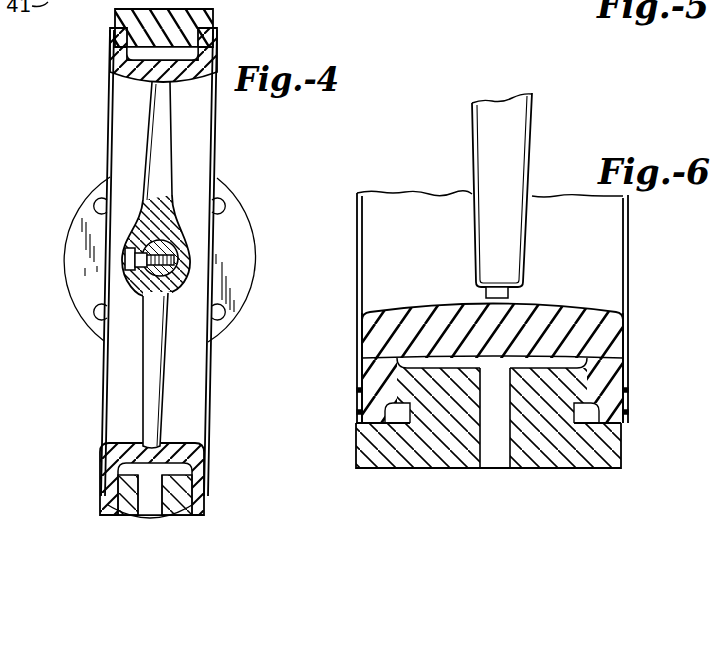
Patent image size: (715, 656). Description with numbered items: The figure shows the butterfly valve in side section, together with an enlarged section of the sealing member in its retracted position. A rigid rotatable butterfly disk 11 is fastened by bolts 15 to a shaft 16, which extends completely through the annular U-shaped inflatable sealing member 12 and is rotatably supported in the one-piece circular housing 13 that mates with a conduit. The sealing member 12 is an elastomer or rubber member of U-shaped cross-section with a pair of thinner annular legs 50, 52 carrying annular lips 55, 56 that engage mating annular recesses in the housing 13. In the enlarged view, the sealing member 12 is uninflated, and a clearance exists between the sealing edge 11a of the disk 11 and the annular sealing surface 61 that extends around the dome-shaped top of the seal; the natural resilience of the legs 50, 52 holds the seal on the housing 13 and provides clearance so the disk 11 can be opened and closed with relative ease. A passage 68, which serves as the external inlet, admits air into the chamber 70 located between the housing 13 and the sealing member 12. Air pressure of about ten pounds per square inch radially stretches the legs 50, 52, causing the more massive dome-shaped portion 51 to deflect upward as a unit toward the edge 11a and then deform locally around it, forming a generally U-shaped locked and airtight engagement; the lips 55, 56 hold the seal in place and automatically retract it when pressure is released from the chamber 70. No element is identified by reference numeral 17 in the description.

In FIG. 4, the butterfly disk 11 is at (175, 142).
In FIG. 6, the butterfly disk 11 is at (497, 190).
In FIG. 6, the sealing edge 11a is at (483, 287).
In FIG. 6, the annular U-shaped inflatable sealing member 12 is at (627, 337).
In FIG. 4, the circular housing 13 is at (217, 15).
In FIG. 6, the circular housing 13 is at (620, 453).
In FIG. 4, the bolts 15 is at (123, 247).
In FIG. 4, the shaft 16 is at (163, 233).
In FIG. 6, the piston ring 17 is at (356, 412).
In FIG. 6, the annular leg 50 is at (487, 343).
In FIG. 6, the dome-shaped portion 51 is at (603, 307).
In FIG. 6, the annular leg 52 is at (333, 355).
In FIG. 6, the annular lip 55 is at (430, 430).
In FIG. 6, the annular lip 56 is at (573, 437).
In FIG. 6, the annular sealing surface 61 is at (513, 291).
In FIG. 4, the passage (external inlet) 68 is at (102, 500).
In FIG. 6, the passage (external inlet) 68 is at (493, 467).
In FIG. 6, the chamber 70 is at (473, 364).